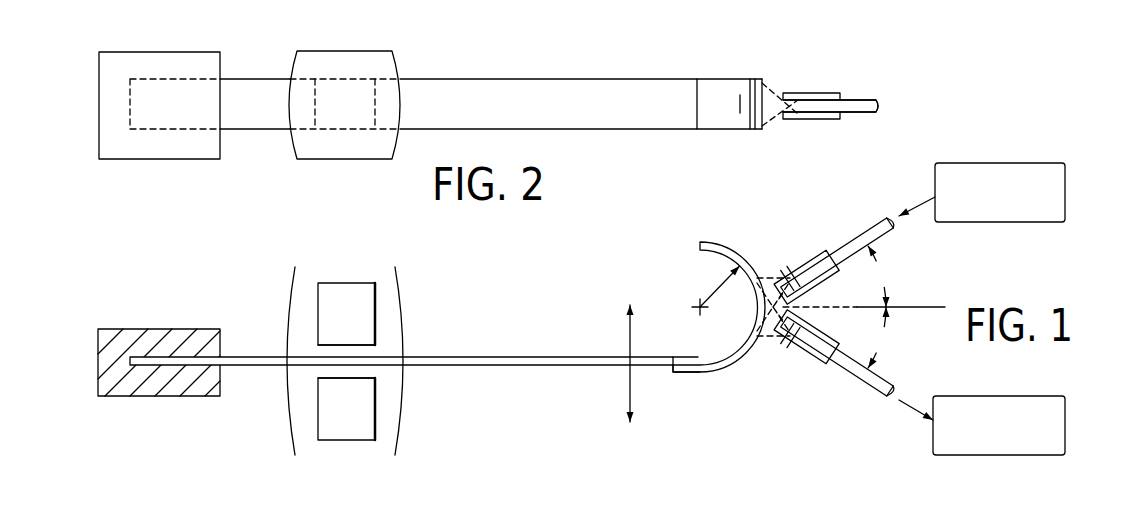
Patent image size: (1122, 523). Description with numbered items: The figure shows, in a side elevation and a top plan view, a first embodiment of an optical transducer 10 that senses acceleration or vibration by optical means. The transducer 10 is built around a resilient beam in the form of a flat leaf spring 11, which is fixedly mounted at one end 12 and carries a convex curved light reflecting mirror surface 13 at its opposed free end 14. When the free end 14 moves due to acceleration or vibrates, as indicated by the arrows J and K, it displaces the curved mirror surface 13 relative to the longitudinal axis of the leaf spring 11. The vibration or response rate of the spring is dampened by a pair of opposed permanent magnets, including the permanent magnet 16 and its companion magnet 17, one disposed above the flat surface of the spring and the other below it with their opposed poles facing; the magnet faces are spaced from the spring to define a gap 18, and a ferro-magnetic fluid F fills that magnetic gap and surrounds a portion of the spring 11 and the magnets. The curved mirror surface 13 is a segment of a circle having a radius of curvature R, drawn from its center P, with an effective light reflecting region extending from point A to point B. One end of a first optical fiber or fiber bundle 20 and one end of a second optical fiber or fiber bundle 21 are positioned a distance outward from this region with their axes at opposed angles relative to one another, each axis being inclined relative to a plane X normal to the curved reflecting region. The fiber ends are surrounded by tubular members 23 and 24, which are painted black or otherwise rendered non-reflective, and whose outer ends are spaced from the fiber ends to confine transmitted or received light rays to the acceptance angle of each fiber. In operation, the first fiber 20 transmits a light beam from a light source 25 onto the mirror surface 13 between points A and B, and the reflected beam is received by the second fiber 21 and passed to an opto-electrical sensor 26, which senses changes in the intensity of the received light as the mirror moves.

In FIG. 2, the optical transducer 10 is at (621, 70).
In FIG. 1, the optical transducer 10 is at (518, 325).
In FIG. 2, the flat leaf spring 11 is at (468, 92).
In FIG. 1, the flat leaf spring 11 is at (472, 366).
In FIG. 2, the fixed end 12 is at (160, 90).
In FIG. 1, the fixed end 12 is at (176, 356).
In FIG. 2, the convex curved light reflecting mirror surface 13 is at (738, 80).
In FIG. 1, the convex curved light reflecting mirror surface 13 is at (723, 240).
In FIG. 2, the free end 14 is at (707, 131).
In FIG. 1, the free end 14 is at (687, 357).
In FIG. 2, the permanent magnet 16 is at (328, 123).
In FIG. 1, the permanent magnet 16 is at (325, 328).
In FIG. 2, the lower permanent magnet 17 is at (345, 104).
In FIG. 1, the lower permanent magnet 17 is at (323, 410).
In FIG. 1, the gap 18 is at (363, 355).
In FIG. 2, the first optical fiber or fiber bundle 20 is at (875, 99).
In FIG. 1, the first optical fiber or fiber bundle 20 is at (865, 224).
In FIG. 2, the second optical fiber or fiber bundle 21 is at (859, 106).
In FIG. 1, the second optical fiber or fiber bundle 21 is at (872, 400).
In FIG. 2, the tubular member 23 is at (803, 94).
In FIG. 1, the tubular member 23 is at (821, 247).
In FIG. 2, the tubular member 24 is at (811, 115).
In FIG. 1, the tubular member 24 is at (818, 375).
In FIG. 1, the light source 25 is at (987, 163).
In FIG. 1, the opto-electrical sensor 26 is at (993, 396).
In FIG. 2, the ferro-magnetic fluid F is at (378, 148).
In FIG. 1, the ferro-magnetic fluid F is at (398, 304).
In FIG. 1, the point A is at (758, 276).
In FIG. 1, the point B is at (755, 337).
In FIG. 1, the arrow J is at (630, 341).
In FIG. 1, the arrow K is at (630, 385).
In FIG. 1, the mirror center of curvature P is at (697, 306).
In FIG. 1, the radius of curvature R is at (718, 283).
In FIG. 1, the plane X is at (918, 307).